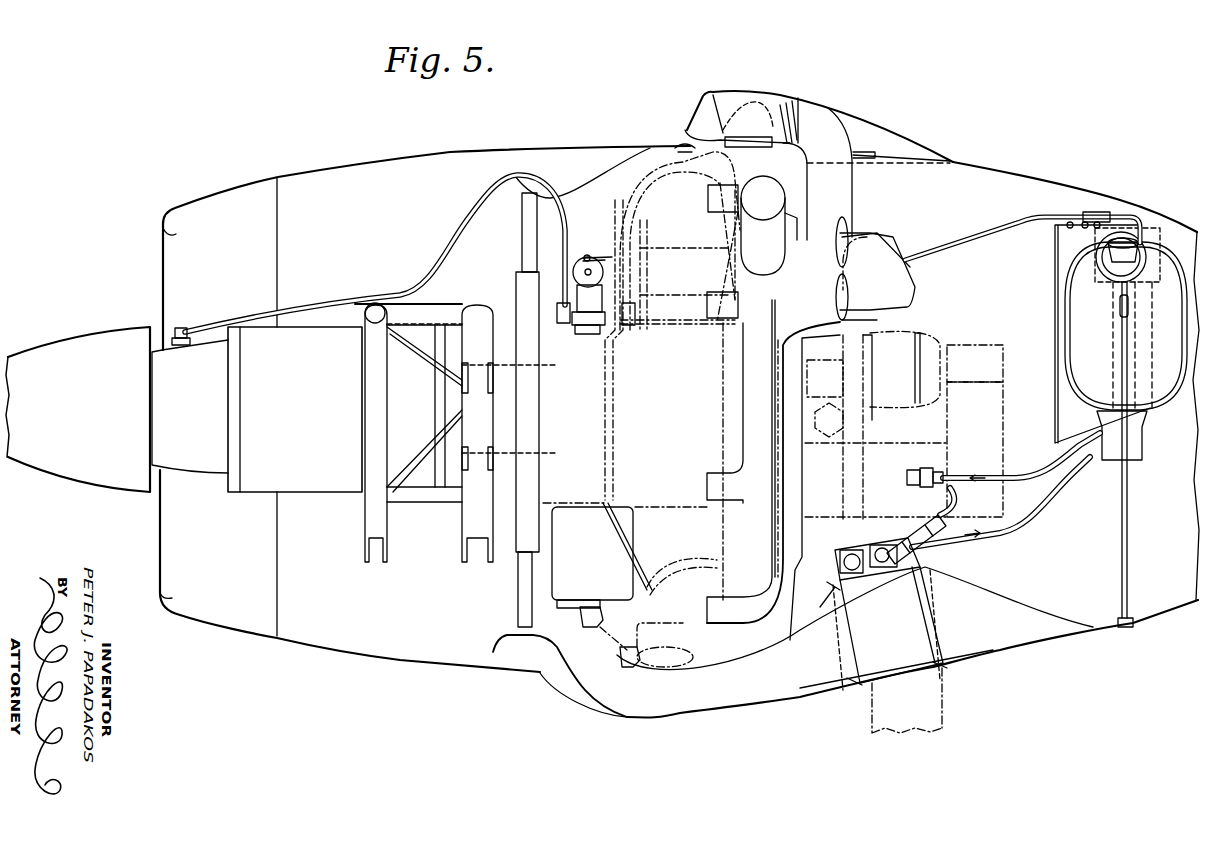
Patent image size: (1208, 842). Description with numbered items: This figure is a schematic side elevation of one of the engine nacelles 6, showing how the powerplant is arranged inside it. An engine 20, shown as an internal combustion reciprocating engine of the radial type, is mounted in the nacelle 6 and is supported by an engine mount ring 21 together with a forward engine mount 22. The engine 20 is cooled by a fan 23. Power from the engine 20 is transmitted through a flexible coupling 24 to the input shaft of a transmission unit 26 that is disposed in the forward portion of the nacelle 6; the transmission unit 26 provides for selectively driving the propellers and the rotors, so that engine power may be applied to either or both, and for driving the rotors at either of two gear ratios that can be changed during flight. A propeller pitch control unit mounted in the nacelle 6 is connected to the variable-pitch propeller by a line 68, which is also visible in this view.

The engine nacelle 6 is at (438, 152).
The engine 20 is at (674, 426).
The engine mount ring 21 is at (803, 528).
The forward engine mount 22 is at (480, 307).
The fan 23 is at (522, 250).
The flexible coupling 24 is at (505, 456).
The transmission unit 26 is at (316, 500).
The line 68 is at (348, 287).